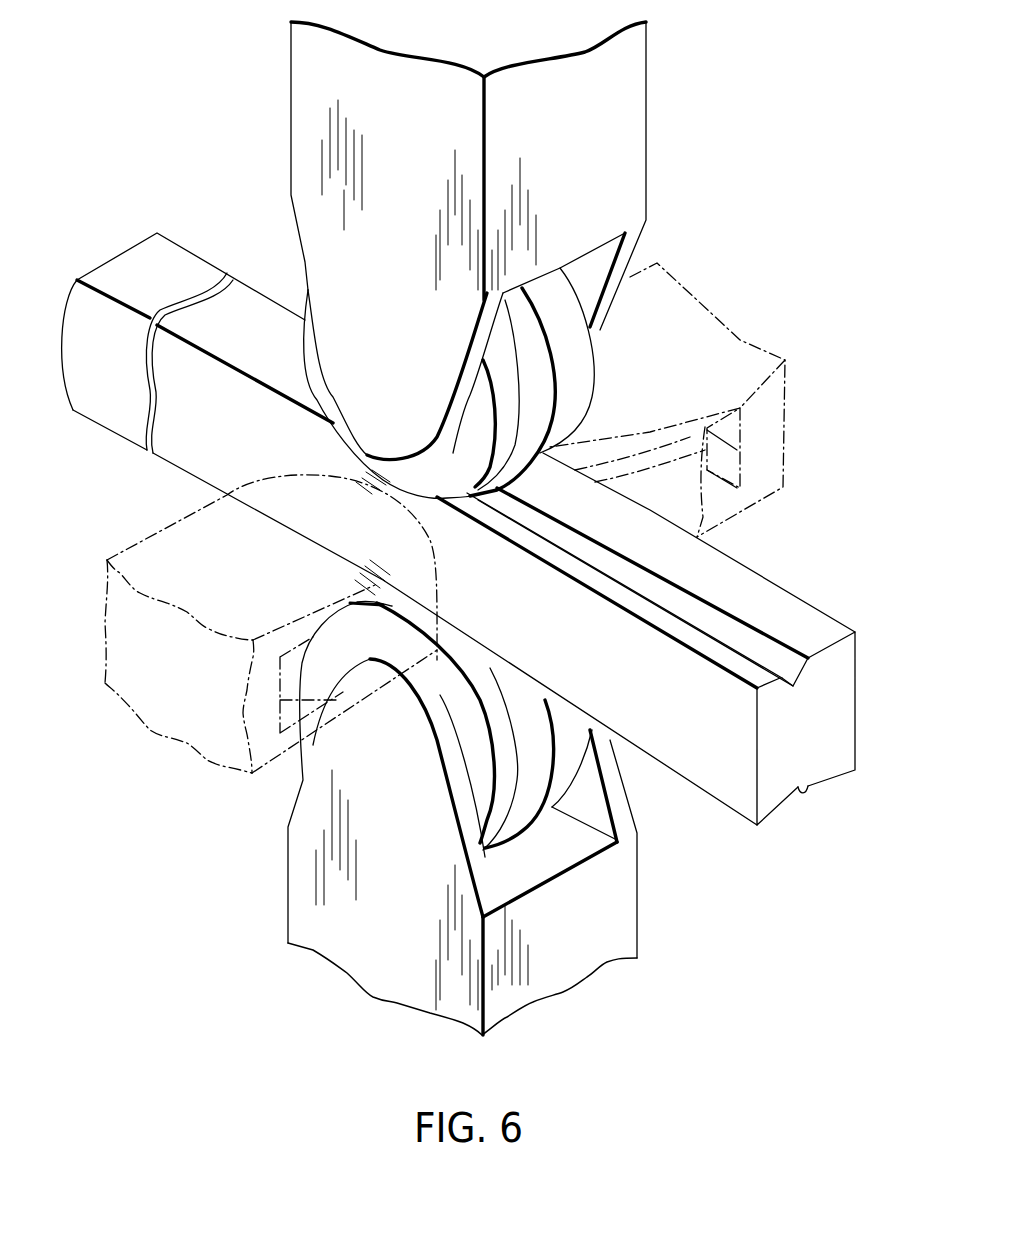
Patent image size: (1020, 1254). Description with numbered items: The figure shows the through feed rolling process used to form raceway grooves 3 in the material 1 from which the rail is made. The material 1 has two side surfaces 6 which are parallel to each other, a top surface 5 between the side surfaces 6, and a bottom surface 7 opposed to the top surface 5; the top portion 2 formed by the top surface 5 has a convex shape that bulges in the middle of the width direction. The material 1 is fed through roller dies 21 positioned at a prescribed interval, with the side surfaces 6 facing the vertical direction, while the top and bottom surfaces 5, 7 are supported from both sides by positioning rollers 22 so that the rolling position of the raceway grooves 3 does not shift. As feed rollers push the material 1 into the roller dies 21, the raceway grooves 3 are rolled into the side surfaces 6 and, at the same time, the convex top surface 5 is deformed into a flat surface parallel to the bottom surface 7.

The material 1 is at (465, 502).
The top portion 2 is at (763, 750).
The raceway grooves 3 is at (787, 637).
The top surface 5 is at (87, 307).
The side surfaces 6 is at (757, 590).
The bottom surface 7 is at (857, 683).
The roller dies 21 is at (583, 380).
The positioning rollers 22 is at (437, 597).